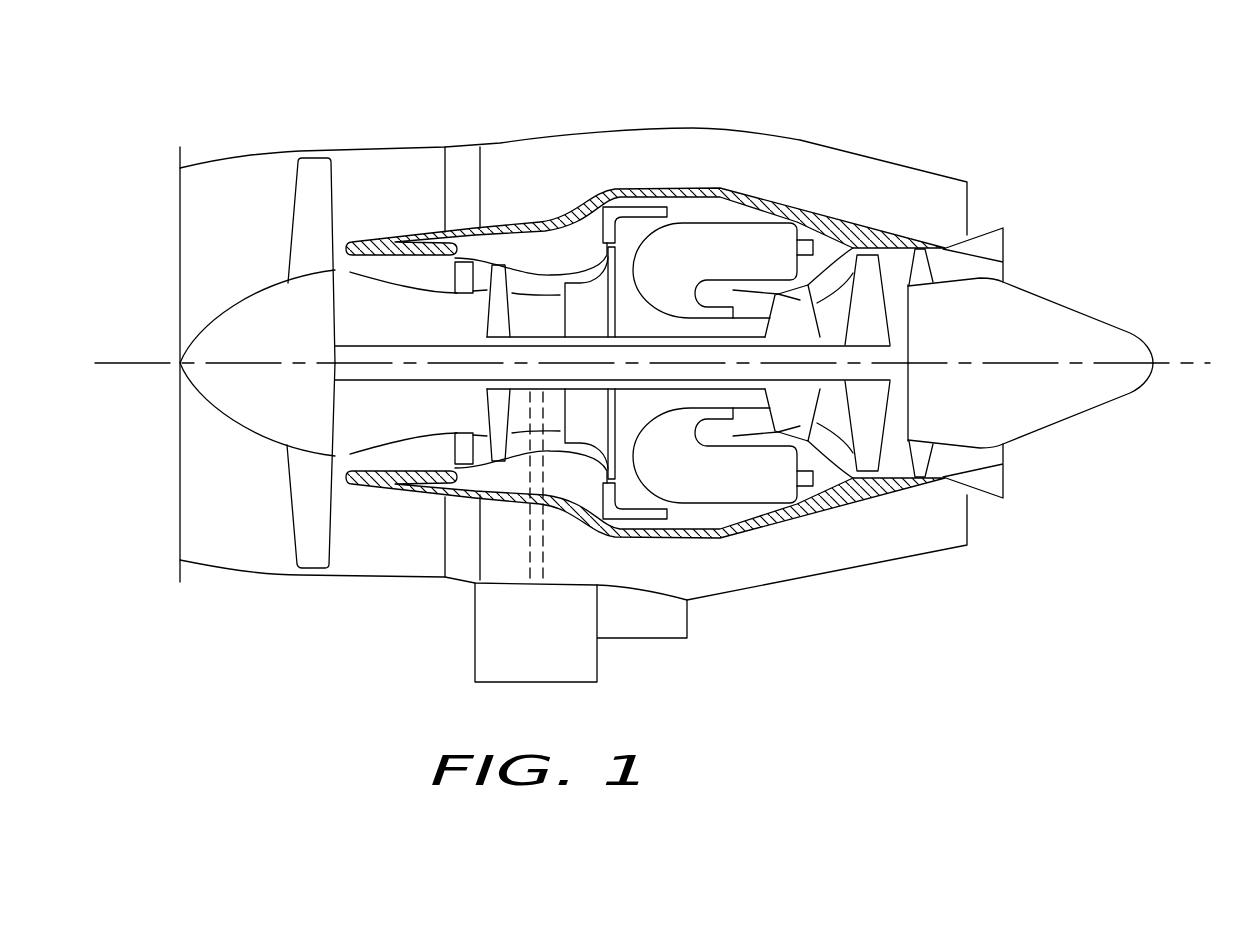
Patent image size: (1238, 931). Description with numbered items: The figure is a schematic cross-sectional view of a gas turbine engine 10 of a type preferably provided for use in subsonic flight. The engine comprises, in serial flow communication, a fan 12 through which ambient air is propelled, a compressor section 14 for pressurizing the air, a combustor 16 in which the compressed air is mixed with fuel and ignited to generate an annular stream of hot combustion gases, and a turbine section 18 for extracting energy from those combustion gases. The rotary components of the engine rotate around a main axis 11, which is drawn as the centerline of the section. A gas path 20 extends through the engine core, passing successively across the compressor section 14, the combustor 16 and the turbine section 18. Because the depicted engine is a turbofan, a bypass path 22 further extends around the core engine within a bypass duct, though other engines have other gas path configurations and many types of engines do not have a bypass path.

The gas turbine engine 10 is at (866, 104).
The main axis 11 is at (1190, 362).
The fan 12 is at (308, 497).
The compressor section 14 is at (528, 280).
The combustor 16 is at (680, 260).
The turbine section 18 is at (832, 422).
The gas path 20 is at (752, 300).
The bypass path 22 is at (823, 182).